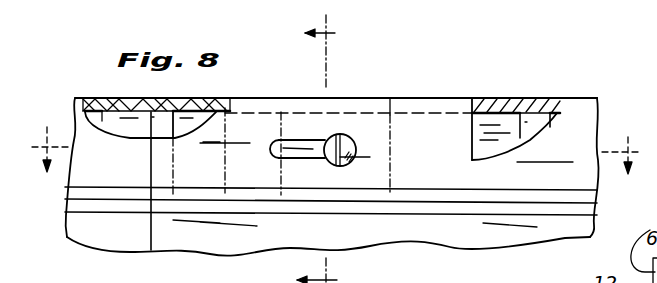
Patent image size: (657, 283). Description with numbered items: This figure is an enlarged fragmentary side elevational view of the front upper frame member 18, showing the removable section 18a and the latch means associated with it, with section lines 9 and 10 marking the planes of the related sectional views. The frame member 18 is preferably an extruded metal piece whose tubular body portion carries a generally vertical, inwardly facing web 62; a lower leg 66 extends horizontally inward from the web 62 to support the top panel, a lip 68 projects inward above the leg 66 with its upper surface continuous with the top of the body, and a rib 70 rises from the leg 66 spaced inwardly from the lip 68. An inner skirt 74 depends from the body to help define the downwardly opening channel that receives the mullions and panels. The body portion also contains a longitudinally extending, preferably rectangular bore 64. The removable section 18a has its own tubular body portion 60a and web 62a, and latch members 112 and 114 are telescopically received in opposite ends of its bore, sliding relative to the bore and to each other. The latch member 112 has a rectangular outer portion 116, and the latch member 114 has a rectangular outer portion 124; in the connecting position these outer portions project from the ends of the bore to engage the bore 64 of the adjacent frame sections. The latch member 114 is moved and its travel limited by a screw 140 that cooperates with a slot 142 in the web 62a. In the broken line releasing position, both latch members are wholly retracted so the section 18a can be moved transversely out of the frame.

The section line 9- 9 is at (337, 176).
The section line 10- 10 is at (332, 149).
The upper frame member 18 is at (78, 97).
The removable section 18a is at (342, 100).
The tubular body portion 60a is at (435, 97).
The web 62 is at (573, 178).
The web 62a is at (405, 166).
The bore 64 is at (85, 112).
The lower leg 66 is at (553, 212).
The lip 68 is at (577, 113).
The rib 70 is at (527, 198).
The inner skirt 74 is at (92, 223).
The latch member 112 is at (115, 121).
The latch member 114 is at (398, 142).
The outer portion 116 is at (160, 117).
The outer portion 124 is at (505, 135).
The screw 140 is at (357, 138).
The slot 142 is at (285, 146).